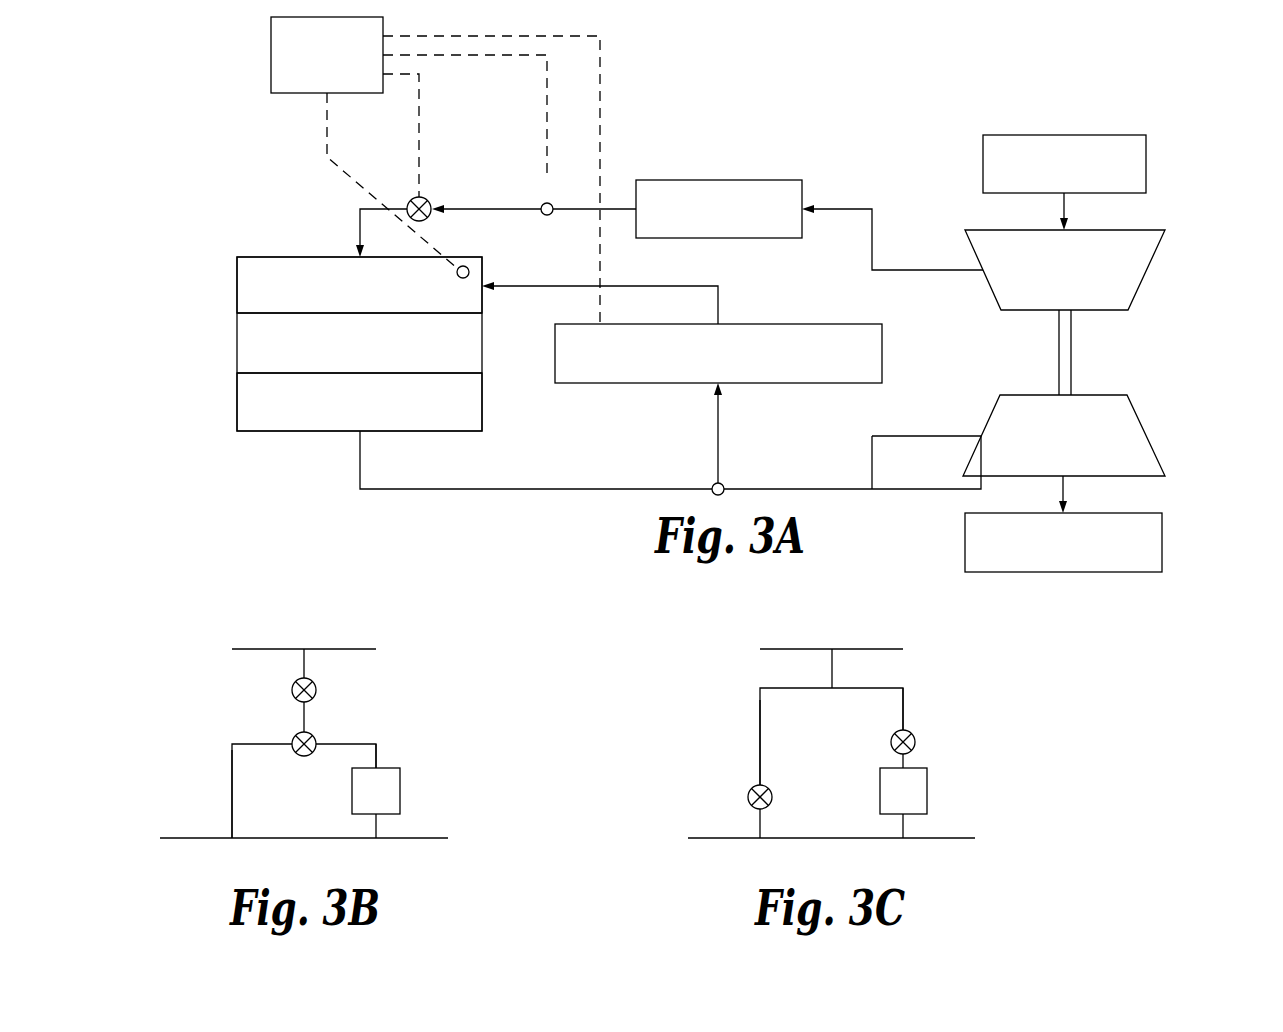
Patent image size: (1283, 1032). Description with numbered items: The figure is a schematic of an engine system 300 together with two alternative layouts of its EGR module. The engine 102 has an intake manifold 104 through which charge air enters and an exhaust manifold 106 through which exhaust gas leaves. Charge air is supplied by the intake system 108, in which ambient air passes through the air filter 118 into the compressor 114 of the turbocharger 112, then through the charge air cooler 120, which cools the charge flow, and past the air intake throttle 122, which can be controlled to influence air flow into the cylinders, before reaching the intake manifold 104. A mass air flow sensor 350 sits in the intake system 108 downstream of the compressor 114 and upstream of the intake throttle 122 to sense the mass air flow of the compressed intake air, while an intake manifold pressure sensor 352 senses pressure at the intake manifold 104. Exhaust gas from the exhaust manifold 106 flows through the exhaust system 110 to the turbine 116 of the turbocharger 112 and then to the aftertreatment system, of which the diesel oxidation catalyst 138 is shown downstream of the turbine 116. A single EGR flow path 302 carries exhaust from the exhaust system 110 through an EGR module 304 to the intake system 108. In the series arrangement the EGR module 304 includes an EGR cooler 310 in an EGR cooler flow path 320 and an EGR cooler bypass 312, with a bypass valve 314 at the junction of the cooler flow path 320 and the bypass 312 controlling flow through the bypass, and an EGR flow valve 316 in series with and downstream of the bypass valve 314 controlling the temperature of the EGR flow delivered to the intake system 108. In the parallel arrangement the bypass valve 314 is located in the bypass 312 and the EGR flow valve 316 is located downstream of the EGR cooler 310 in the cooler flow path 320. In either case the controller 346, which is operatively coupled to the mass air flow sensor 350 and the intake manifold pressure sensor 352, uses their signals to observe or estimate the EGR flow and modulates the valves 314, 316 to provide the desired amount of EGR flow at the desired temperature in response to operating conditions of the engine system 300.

In FIG. 3A, the engine system 300 is at (262, 137).
In FIG. 3A, the controller 346 is at (435, 170).
In FIG. 3A, the engine 102 is at (482, 348).
In FIG. 3A, the intake manifold 104 is at (273, 257).
In FIG. 3A, the exhaust manifold 106 is at (280, 431).
In FIG. 3A, the intake system 108 is at (688, 155).
In FIG. 3B, the intake system 108 is at (323, 647).
In FIG. 3C, the intake system 108 is at (852, 647).
In FIG. 3A, the exhaust system 110 is at (568, 498).
In FIG. 3B, the exhaust system 110 is at (388, 835).
In FIG. 3C, the exhaust system 110 is at (870, 835).
In FIG. 3A, the turbocharger 112 is at (1071, 345).
In FIG. 3A, the compressor 114 is at (1140, 295).
In FIG. 3A, the turbine 116 is at (1142, 420).
In FIG. 3A, the air filter 118 is at (1146, 182).
In FIG. 3A, the charge air cooler 120 is at (802, 188).
In FIG. 3A, the air intake throttle 122 is at (410, 200).
In FIG. 3A, the diesel oxidation catalyst 138 is at (1162, 537).
In FIG. 3A, the EGR flow path 302 is at (660, 393).
In FIG. 3B, the EGR flow path 302 is at (200, 675).
In FIG. 3C, the EGR flow path 302 is at (762, 678).
In FIG. 3A, the EGR module 304 is at (832, 383).
In FIG. 3B, the EGR module 304 is at (378, 737).
In FIG. 3C, the EGR module 304 is at (920, 678).
In FIG. 3B, the EGR cooler 310 is at (400, 795).
In FIG. 3C, the EGR cooler 310 is at (927, 795).
In FIG. 3B, the EGR cooler bypass 312 is at (232, 775).
In FIG. 3C, the EGR cooler bypass 312 is at (760, 723).
In FIG. 3B, the bypass valve 314 is at (305, 756).
In FIG. 3C, the bypass valve 314 is at (748, 797).
In FIG. 3B, the EGR flow valve 316 is at (292, 690).
In FIG. 3C, the EGR flow valve 316 is at (891, 740).
In FIG. 3B, the EGR cooler flow path 320 is at (376, 757).
In FIG. 3C, the EGR cooler flow path 320 is at (903, 712).
In FIG. 3A, the mass air flow sensor 350 is at (541, 213).
In FIG. 3A, the intake manifold pressure sensor 352 is at (460, 278).